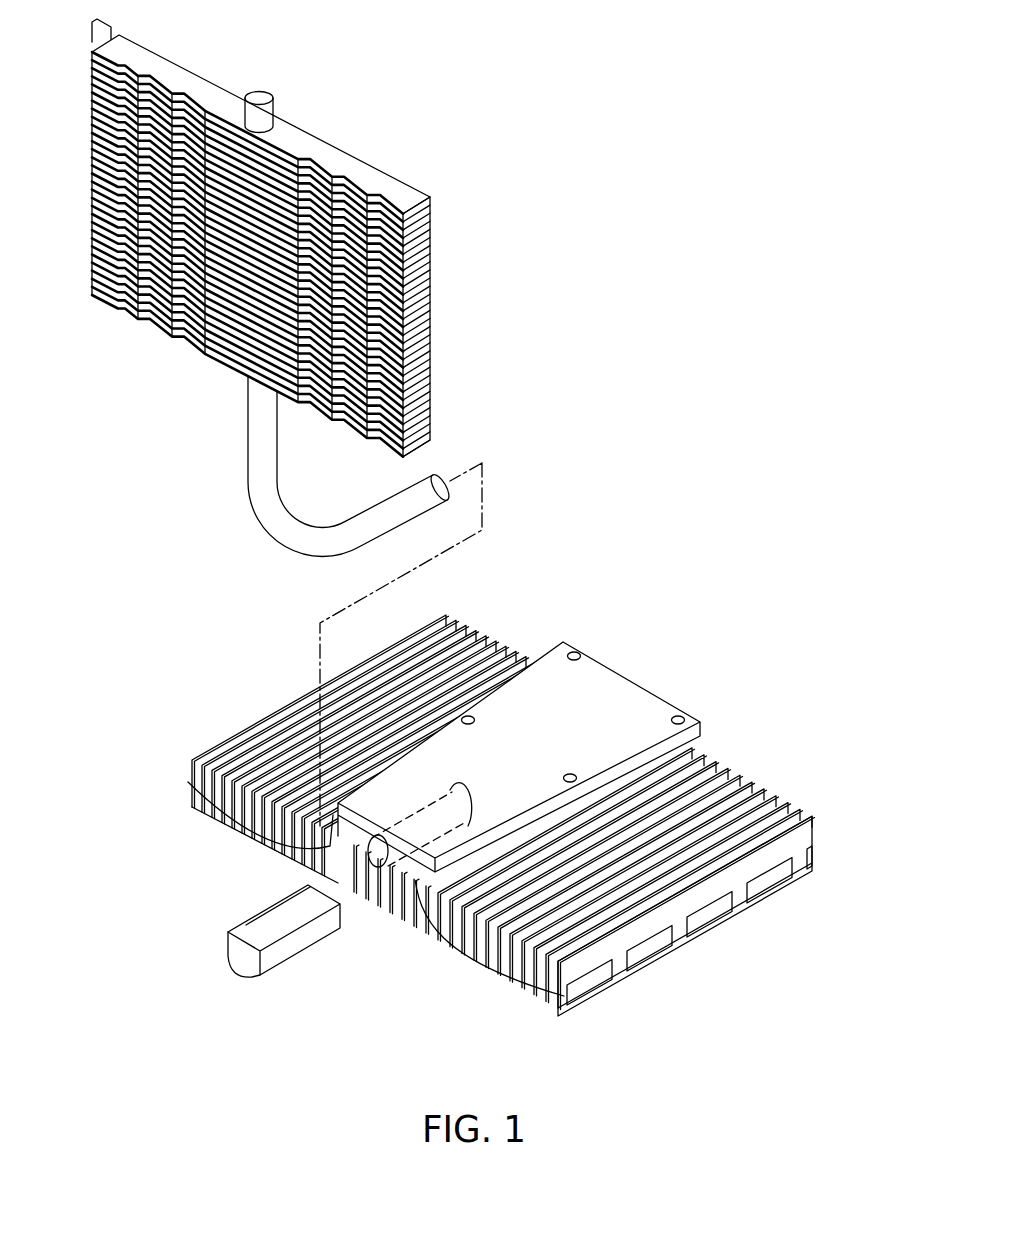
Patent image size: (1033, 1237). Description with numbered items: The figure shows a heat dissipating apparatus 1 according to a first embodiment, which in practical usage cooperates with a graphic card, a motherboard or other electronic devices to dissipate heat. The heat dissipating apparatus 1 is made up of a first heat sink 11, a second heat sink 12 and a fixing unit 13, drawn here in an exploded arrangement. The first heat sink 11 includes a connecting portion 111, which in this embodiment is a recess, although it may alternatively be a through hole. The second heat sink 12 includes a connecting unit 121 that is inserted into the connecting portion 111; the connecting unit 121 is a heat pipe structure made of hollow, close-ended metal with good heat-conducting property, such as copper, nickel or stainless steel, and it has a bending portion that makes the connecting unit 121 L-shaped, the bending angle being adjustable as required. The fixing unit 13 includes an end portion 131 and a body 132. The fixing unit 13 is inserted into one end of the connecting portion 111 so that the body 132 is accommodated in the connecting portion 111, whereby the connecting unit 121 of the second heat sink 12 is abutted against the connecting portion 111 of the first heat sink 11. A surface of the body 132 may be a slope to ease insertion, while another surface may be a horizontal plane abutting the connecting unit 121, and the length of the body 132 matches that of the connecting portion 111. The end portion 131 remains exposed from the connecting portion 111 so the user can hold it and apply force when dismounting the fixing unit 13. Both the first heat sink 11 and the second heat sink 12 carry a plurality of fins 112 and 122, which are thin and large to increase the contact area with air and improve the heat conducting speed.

The heat dissipating apparatus 1 is at (637, 96).
The first heat sink 11 is at (501, 824).
The connecting portion 111 is at (379, 868).
The fins 112 is at (584, 996).
The second heat sink 12 is at (267, 238).
The connecting unit 121 is at (258, 437).
The fins 122 is at (293, 140).
The fixing unit 13 is at (226, 942).
The end portion 131 is at (236, 968).
The body 132 is at (252, 924).